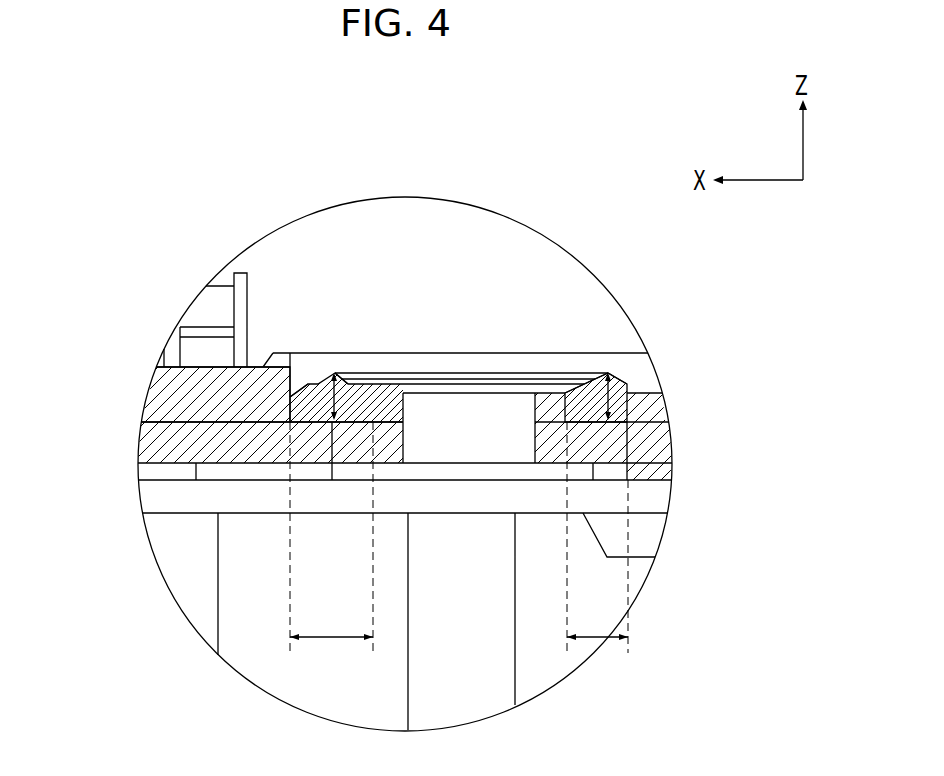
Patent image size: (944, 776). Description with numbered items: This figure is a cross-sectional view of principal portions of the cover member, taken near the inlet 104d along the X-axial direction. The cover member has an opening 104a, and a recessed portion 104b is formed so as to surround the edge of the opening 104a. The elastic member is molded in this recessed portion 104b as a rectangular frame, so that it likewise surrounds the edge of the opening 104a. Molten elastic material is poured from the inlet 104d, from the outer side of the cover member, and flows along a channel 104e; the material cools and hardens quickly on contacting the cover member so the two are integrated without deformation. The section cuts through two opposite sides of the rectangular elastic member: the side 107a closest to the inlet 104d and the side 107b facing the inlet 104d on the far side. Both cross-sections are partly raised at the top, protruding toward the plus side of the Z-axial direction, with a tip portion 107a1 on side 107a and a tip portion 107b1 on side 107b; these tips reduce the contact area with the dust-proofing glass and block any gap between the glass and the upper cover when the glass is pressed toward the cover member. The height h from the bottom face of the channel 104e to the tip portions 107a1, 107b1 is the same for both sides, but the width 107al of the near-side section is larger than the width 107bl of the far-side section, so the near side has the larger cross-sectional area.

The opening 104a is at (483, 375).
The recessed portion 104b is at (305, 375).
The inlet 104d is at (167, 393).
The channel 104e is at (616, 425).
The side of the elastic member closest to the inlet 107a is at (346, 376).
The tip portion 107a1 is at (302, 392).
The side of the elastic member facing the inlet 107b is at (620, 379).
The tip portion 107b1 is at (604, 376).
The height h is at (334, 418).
The width of cross-section 107α 107al is at (330, 638).
The width of cross-section 107β 107bl is at (597, 640).